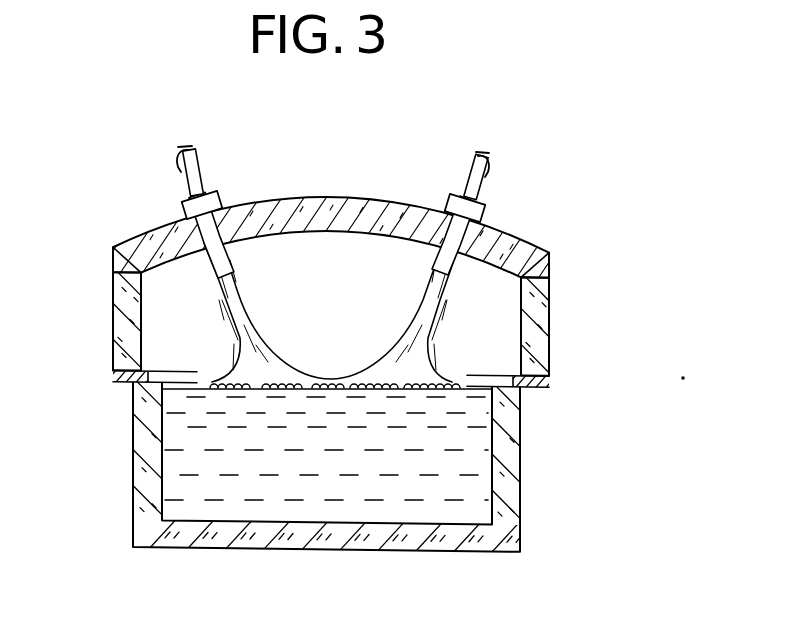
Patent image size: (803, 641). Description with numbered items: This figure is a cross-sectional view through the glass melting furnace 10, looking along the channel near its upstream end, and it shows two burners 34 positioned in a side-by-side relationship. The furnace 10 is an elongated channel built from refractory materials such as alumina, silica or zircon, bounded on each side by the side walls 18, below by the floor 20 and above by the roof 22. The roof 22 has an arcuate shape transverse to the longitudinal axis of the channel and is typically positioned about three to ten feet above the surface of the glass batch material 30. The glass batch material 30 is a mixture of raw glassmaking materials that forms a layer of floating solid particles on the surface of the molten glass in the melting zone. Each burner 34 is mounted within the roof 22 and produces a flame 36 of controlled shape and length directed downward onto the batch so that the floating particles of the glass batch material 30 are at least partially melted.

The glass melting furnace 10 is at (576, 274).
The side walls 18 is at (113, 319).
The floor 20 is at (393, 549).
The roof 22 is at (336, 195).
The glass batch material 30 is at (424, 383).
The burner 34 is at (186, 172).
The arcs 36 is at (417, 310).